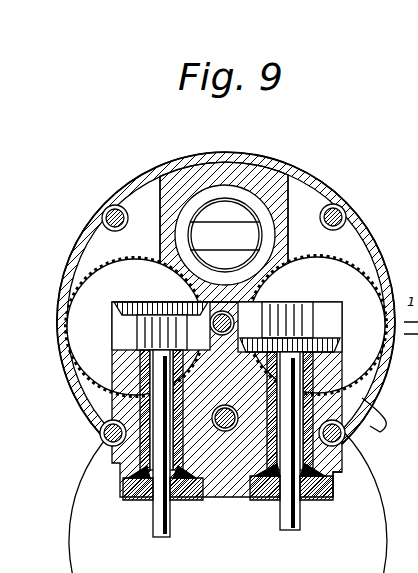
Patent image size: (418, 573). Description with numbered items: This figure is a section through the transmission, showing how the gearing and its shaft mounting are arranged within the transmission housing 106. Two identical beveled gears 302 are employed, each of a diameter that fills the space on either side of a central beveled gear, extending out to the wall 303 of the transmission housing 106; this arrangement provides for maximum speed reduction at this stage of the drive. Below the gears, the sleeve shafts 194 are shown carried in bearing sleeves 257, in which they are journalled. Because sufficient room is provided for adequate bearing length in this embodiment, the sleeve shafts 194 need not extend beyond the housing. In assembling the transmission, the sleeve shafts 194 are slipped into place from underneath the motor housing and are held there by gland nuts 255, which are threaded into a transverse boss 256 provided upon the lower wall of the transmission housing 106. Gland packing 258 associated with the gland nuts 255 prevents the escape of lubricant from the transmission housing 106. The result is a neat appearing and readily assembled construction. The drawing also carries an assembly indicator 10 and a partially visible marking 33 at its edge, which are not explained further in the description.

The transmission housing 106 is at (232, 162).
The beveled gears 302 is at (146, 288).
The wall of the transmission housing 303 is at (58, 330).
The direction arrow 10 is at (46, 325).
The bearing sleeves 257 is at (140, 452).
The sleeve shafts 194 is at (128, 470).
The gland packing 258 is at (122, 492).
The transverse boss 256 is at (342, 489).
The gland nuts 255 is at (175, 508).
The partial numeral 33 is at (411, 107).